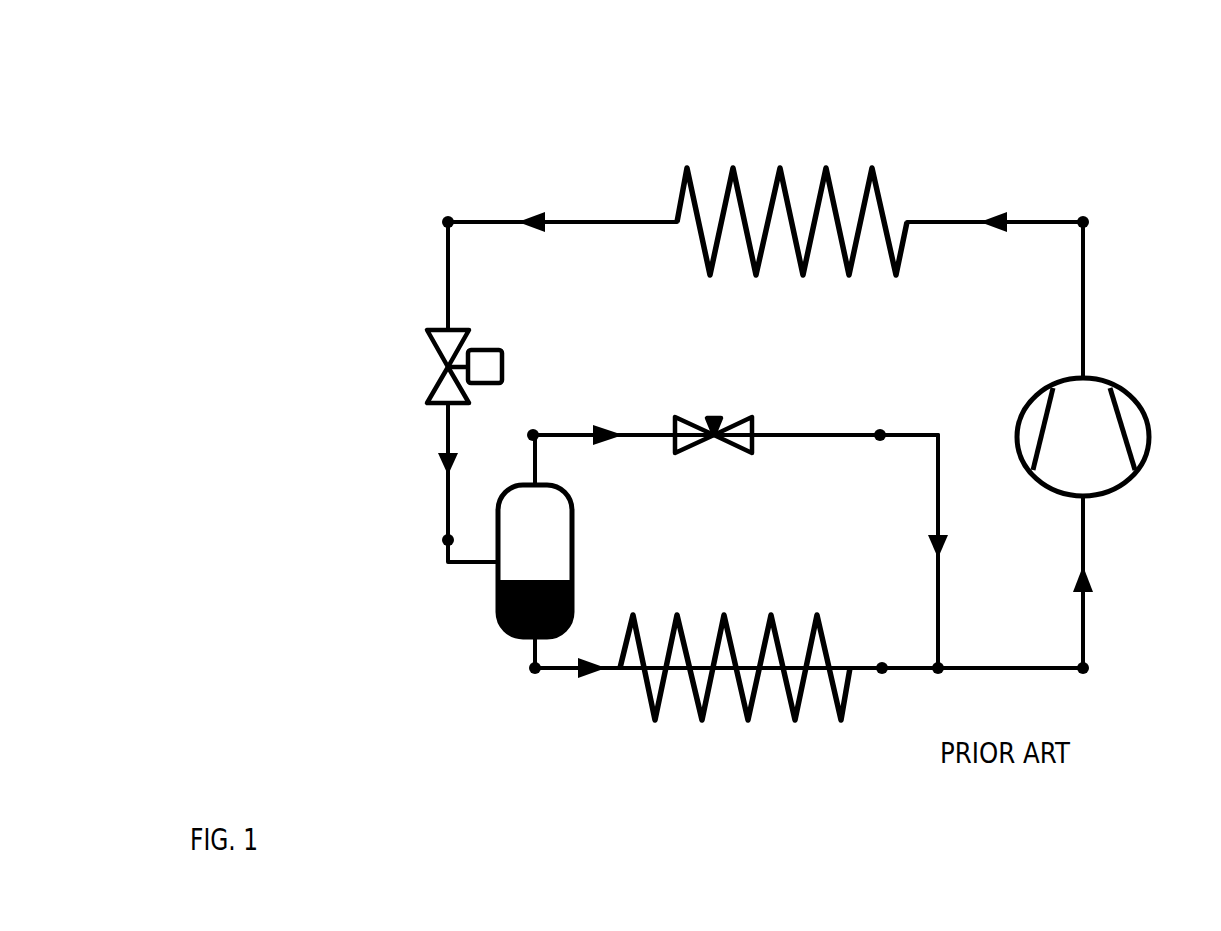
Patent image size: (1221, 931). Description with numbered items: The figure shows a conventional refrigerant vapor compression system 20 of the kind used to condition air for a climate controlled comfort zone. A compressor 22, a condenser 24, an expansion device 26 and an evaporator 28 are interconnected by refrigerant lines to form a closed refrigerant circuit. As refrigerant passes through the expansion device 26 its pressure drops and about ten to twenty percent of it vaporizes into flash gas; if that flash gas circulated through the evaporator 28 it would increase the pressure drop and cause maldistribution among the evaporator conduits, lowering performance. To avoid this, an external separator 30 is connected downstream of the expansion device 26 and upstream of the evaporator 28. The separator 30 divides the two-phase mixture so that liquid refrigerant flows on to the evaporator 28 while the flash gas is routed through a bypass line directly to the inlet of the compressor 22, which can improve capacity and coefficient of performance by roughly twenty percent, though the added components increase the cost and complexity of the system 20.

The refrigerant vapor compression system 20 is at (304, 140).
The compressor 22 is at (1100, 478).
The condenser 24 is at (780, 178).
The expansion device 26 is at (452, 391).
The evaporator 28 is at (756, 710).
The external separator 30 is at (500, 593).